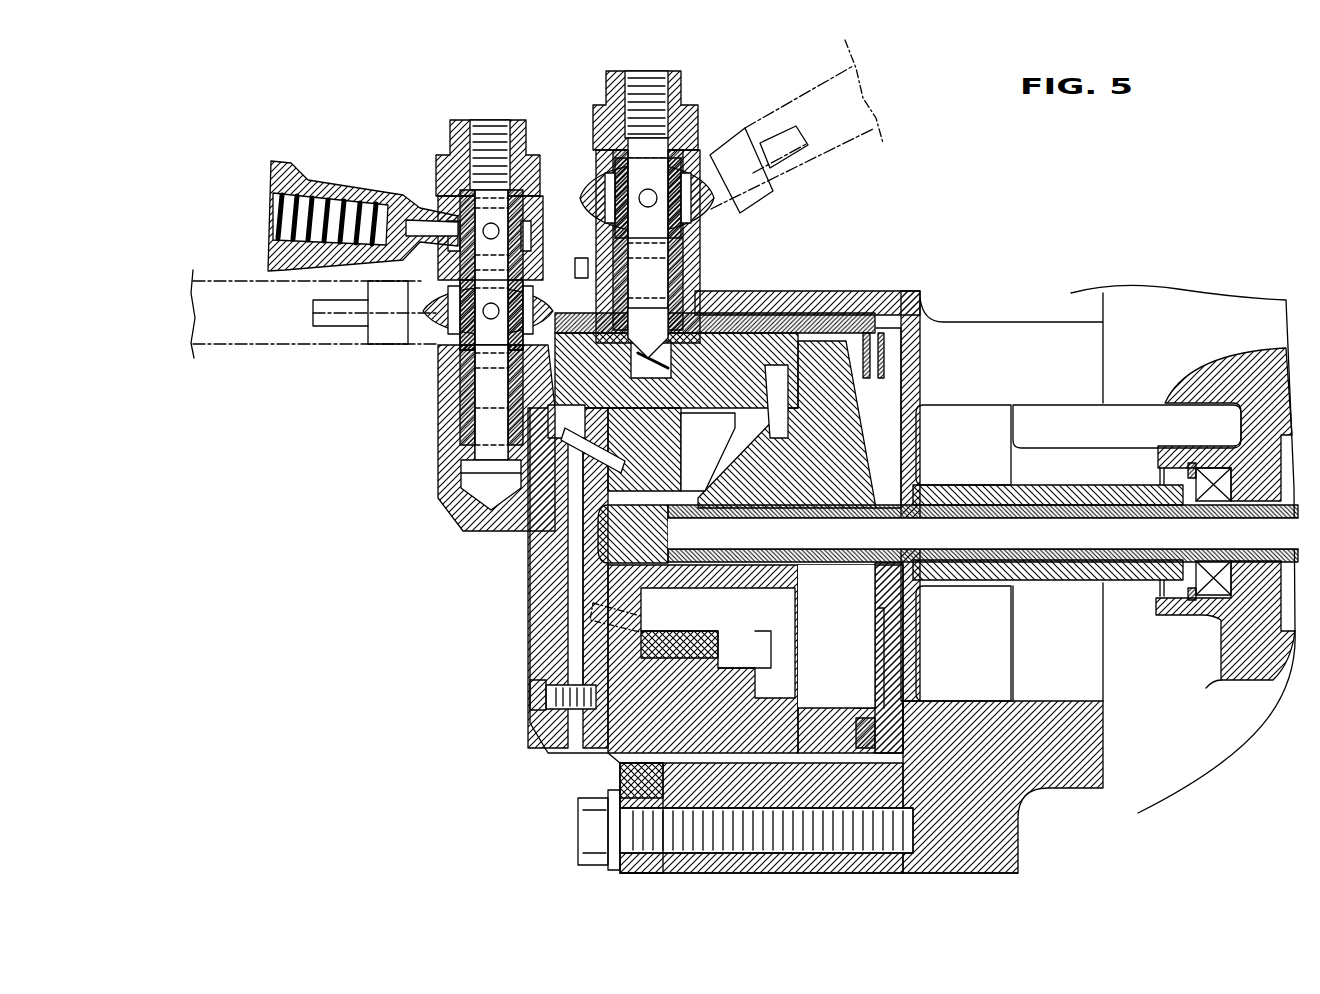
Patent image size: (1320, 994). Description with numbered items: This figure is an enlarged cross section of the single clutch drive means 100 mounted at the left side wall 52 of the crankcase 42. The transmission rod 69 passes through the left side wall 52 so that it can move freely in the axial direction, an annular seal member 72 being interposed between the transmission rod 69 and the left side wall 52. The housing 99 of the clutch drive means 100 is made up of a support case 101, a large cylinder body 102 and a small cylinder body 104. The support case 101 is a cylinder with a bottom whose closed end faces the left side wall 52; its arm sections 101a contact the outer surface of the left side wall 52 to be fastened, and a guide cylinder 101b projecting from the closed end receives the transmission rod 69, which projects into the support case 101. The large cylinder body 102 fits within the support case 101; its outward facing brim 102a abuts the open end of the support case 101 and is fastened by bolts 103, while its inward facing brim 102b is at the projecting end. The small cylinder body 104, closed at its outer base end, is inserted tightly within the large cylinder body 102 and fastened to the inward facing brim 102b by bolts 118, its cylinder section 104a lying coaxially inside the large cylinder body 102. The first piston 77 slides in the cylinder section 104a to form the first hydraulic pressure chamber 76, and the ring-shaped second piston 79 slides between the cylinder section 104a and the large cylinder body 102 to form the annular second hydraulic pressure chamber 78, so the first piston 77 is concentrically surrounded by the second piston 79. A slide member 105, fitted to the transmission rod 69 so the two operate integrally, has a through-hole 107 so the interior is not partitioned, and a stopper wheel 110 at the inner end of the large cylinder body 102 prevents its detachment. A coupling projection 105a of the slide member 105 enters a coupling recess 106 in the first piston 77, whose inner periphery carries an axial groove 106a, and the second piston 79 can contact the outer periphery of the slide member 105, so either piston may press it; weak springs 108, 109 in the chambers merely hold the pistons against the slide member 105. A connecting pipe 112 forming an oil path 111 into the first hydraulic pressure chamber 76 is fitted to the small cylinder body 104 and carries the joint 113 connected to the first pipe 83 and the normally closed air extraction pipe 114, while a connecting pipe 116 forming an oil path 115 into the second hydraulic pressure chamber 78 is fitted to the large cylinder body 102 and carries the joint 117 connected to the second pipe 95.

The crankcase 42 is at (1128, 797).
The left side wall 52 is at (1122, 305).
The transmission rod 69 is at (1045, 557).
The annular seal member 72 is at (1195, 442).
The first hydraulic pressure chamber 76 is at (560, 565).
The first piston 77 is at (528, 596).
The second hydraulic pressure chamber 78 is at (612, 755).
The second piston 79 is at (772, 304).
The first pipe 83 is at (275, 343).
The second pipe 95 is at (815, 158).
The housing 99 is at (842, 278).
The clutch drive means 100 is at (612, 866).
The support case 101 is at (880, 283).
The arm sections 101a is at (960, 313).
The guide cylinder 101b is at (1048, 492).
The large cylinder body 102 is at (818, 858).
The outward facing brim 102a is at (637, 865).
The inward facing brim 102b is at (535, 675).
The bolts 103 is at (583, 826).
The small cylinder body 104 is at (535, 642).
The cylinder section 104a is at (700, 625).
The slide member 105 is at (820, 415).
The coupling projection 105a is at (530, 534).
The coupling recess 106 is at (690, 484).
The groove 106a is at (678, 548).
The through-hole 107 is at (872, 660).
The spring 108 is at (470, 462).
The spring 109 is at (680, 276).
The stopper wheel 110 is at (900, 703).
The oil path 111 is at (430, 372).
The connecting pipe 112 is at (445, 422).
The joint 113 is at (530, 292).
The air extraction pipe 114 is at (375, 186).
The oil path 115 is at (700, 237).
The connecting pipe 116 is at (688, 110).
The joint 117 is at (578, 178).
The bolts 118 is at (525, 700).